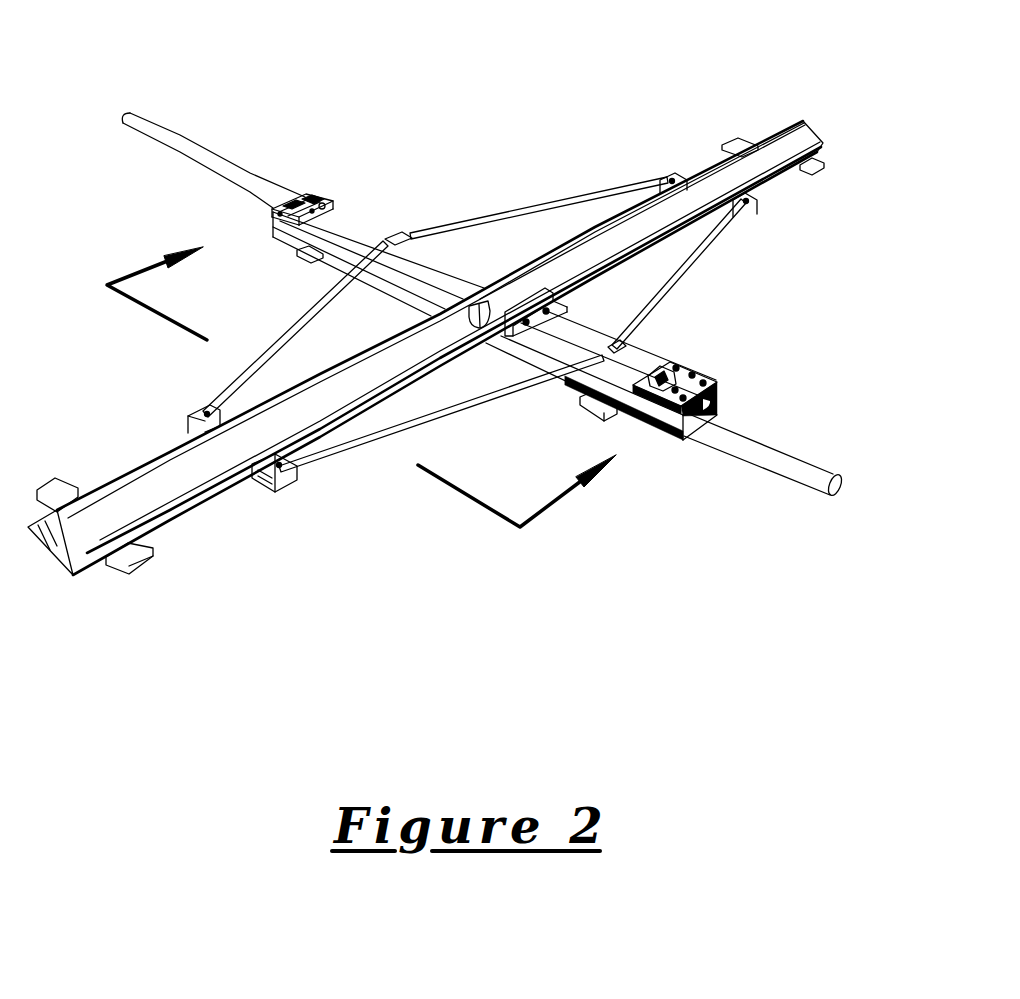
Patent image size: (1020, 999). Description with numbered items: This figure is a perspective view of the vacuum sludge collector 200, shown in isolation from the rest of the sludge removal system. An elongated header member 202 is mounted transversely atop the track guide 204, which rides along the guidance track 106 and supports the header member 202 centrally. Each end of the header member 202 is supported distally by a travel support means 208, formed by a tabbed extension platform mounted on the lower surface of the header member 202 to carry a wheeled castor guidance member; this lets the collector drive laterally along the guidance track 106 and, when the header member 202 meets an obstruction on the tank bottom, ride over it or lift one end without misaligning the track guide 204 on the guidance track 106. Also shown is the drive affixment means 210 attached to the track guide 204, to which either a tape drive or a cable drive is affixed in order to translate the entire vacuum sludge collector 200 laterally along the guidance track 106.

The vacuum sludge collector 200 is at (490, 112).
The guidance track 106 is at (778, 447).
The header member 202 is at (163, 490).
The track guide 204 is at (683, 440).
The travel support means 208 is at (820, 167).
The drive affixment means 210 is at (341, 198).